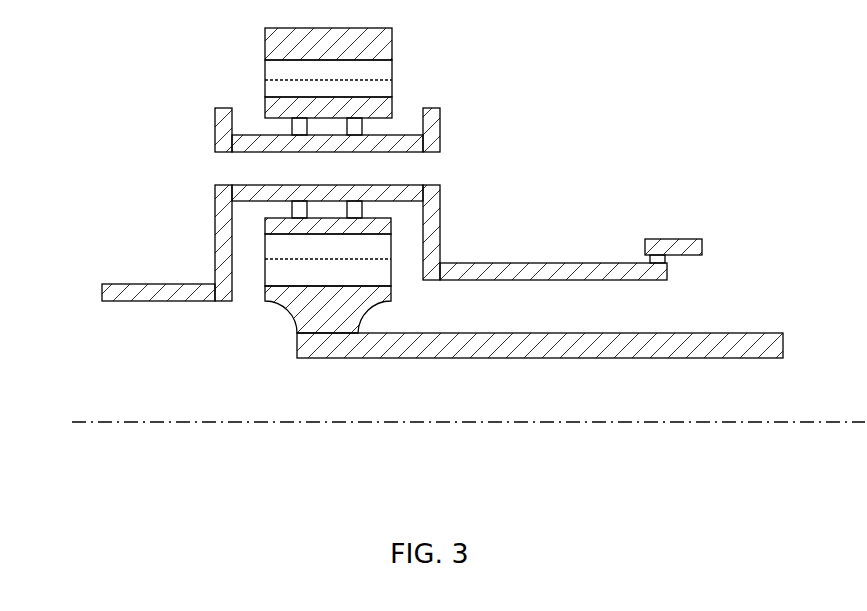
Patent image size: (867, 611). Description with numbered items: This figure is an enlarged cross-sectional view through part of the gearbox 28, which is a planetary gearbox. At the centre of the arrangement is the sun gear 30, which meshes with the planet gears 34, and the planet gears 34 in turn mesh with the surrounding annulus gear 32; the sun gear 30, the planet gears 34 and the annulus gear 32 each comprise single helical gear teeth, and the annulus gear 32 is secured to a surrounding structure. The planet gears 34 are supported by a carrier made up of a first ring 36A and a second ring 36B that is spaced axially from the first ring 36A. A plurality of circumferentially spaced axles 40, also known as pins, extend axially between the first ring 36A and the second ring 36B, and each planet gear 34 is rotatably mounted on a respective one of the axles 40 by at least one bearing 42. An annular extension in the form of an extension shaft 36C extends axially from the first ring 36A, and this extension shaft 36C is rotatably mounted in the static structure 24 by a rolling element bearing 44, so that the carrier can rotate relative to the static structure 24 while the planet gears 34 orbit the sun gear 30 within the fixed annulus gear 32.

The static structure 24 is at (702, 250).
The gearbox 28 is at (97, 365).
The sun gear 30 is at (288, 283).
The annulus gear 32 is at (383, 43).
The planet gear 34 is at (383, 108).
The first ring 36A is at (433, 242).
The second ring 36B is at (218, 252).
The extension shaft 36C is at (602, 272).
The axle 40 is at (410, 184).
The bearing 42 is at (292, 212).
The rolling element bearing 44 is at (667, 262).